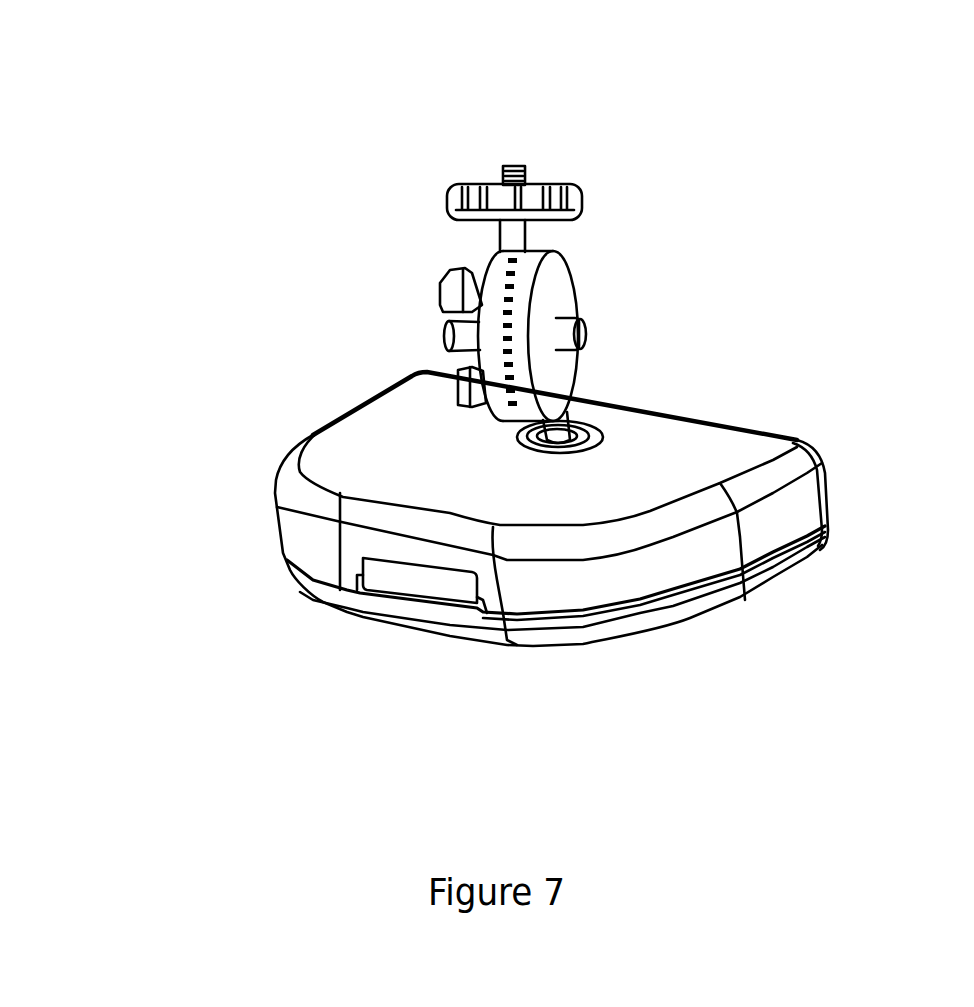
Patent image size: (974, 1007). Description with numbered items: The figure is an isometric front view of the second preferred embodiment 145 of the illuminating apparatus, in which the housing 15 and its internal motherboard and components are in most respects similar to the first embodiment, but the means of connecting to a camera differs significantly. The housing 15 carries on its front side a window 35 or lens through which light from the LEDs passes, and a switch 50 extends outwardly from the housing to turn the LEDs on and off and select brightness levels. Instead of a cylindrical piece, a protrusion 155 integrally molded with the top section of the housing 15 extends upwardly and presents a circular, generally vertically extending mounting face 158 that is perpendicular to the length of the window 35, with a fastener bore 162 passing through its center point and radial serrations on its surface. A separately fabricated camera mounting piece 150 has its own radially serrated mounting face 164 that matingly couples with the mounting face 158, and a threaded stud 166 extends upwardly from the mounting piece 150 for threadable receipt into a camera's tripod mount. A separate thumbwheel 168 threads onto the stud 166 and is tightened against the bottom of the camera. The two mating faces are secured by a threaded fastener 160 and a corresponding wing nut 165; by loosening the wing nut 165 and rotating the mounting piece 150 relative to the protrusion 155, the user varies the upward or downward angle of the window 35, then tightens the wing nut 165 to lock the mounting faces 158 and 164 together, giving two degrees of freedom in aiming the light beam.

The housing 15 is at (662, 470).
The window 35 is at (423, 585).
The switch 50 is at (770, 414).
The second preferred embodiment 145 is at (238, 482).
The mounting piece 150 is at (490, 259).
The protrusion 155 is at (526, 293).
The mounting face 158 is at (516, 372).
The threaded fastener 160 is at (447, 340).
The fastener bore 162 is at (581, 324).
The mounting face 164 is at (513, 263).
The wing nut 165 is at (442, 283).
The threaded stud 166 is at (519, 167).
The thumbwheel 168 is at (484, 181).